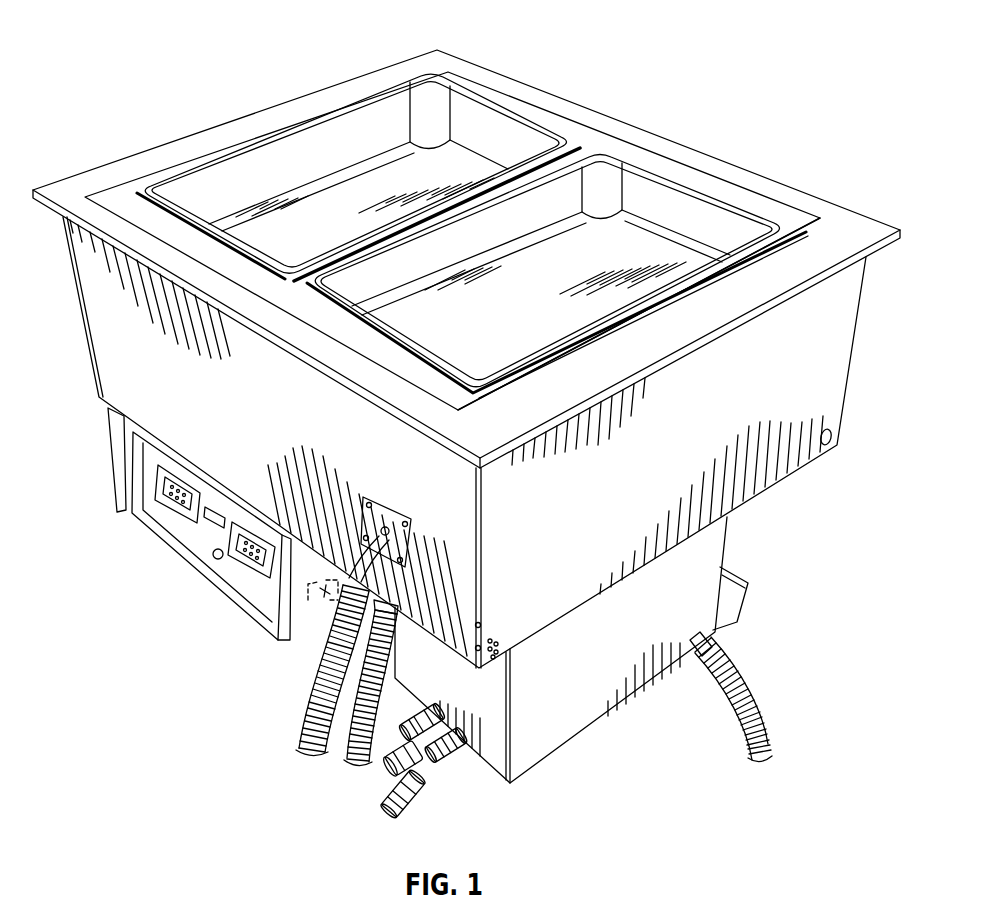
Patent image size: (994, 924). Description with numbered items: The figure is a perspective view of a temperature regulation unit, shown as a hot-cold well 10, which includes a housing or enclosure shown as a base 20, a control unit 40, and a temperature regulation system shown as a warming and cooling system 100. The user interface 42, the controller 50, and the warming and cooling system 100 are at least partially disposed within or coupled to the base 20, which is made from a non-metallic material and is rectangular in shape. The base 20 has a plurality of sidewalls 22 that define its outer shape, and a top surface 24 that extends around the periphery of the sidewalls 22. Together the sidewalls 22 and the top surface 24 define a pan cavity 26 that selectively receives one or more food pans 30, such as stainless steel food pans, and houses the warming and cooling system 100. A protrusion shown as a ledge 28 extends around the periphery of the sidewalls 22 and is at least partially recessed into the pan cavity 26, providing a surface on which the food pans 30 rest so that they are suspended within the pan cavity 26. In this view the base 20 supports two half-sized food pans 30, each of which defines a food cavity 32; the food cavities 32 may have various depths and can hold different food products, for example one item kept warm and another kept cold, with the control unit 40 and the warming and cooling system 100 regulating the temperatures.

The hot-cold well 10 is at (118, 70).
The base 20 is at (489, 442).
The sidewalls 22 is at (832, 393).
The top surface 24 is at (867, 230).
The pan cavity 26 is at (788, 212).
The ledge 28 is at (806, 229).
The food pans 30 is at (528, 136).
The food cavity 32 is at (433, 163).
The control unit 40 is at (192, 524).
The user interface 42 is at (177, 510).
The controller 50 is at (327, 598).
The warming and cooling system 100 is at (570, 773).